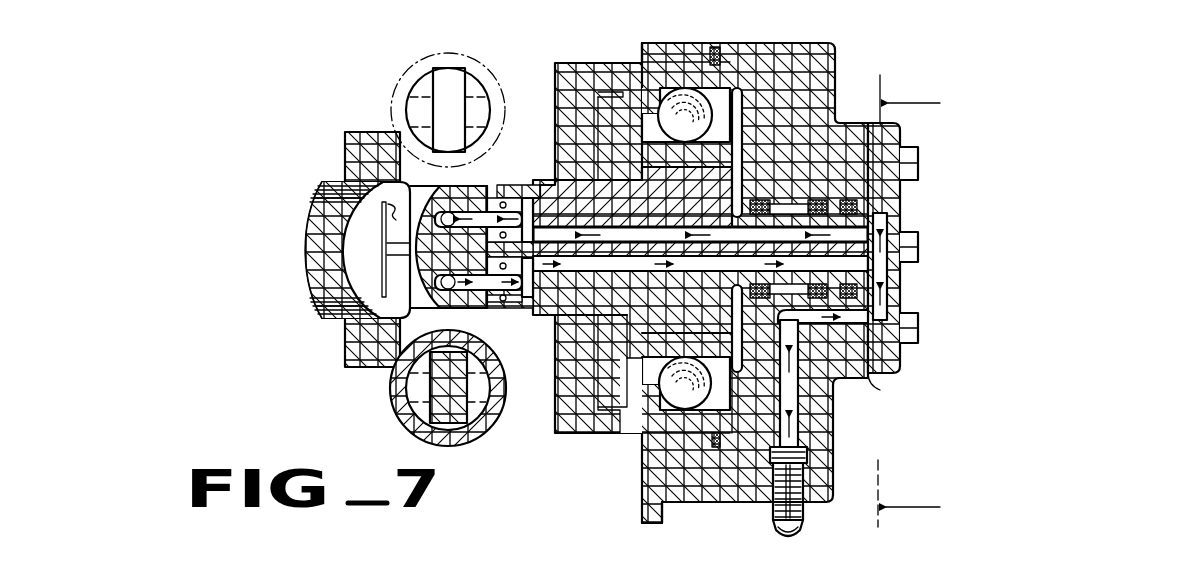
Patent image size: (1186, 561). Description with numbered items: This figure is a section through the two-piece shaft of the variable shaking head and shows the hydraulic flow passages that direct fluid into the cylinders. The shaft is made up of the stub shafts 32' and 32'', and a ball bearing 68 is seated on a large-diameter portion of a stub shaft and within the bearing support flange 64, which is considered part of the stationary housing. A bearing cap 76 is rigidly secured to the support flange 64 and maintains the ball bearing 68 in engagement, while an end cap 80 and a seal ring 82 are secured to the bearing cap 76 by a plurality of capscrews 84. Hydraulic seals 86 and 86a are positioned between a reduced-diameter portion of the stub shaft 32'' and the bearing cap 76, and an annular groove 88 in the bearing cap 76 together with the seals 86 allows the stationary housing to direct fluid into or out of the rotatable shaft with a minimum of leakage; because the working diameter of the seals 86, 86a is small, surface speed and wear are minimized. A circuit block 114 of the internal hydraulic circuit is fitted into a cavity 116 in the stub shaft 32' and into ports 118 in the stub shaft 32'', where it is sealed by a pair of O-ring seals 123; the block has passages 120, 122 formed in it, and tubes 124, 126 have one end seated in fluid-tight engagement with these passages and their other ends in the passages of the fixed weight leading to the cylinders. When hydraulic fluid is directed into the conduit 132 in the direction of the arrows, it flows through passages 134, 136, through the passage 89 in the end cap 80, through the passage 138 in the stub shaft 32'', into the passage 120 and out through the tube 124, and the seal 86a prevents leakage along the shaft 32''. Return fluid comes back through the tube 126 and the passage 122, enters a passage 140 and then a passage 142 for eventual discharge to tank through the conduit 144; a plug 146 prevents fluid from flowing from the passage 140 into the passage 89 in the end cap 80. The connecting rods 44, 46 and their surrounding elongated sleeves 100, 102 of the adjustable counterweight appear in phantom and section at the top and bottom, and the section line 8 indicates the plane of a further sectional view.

The elongated sleeve 102 is at (403, 76).
The connecting rod 46 is at (428, 88).
The passage 120 is at (463, 213).
The tube 126 is at (440, 190).
The cavity 116 is at (380, 204).
The circuit block 114 is at (487, 247).
The stub shaft 32' is at (269, 250).
The tube 124 is at (445, 316).
The connecting rod 44 is at (443, 389).
The elongated sleeve 100 is at (397, 413).
The ball bearing 68 is at (692, 88).
The bearing cap 76 is at (823, 62).
The section line 8 is at (909, 301).
The capscrews 84 is at (920, 152).
The passage 89 is at (880, 223).
The plug 146 is at (860, 268).
The passage 136 is at (860, 321).
The end cap 80 is at (893, 368).
The seal ring 82 is at (899, 394).
The hydraulic seals 86 is at (817, 200).
The annular groove 88 is at (788, 207).
The hydraulic seal 86a is at (850, 202).
The stub shaft 32'' is at (700, 211).
The passage 138 is at (664, 232).
The port 118 is at (528, 207).
The passage 122 is at (512, 284).
The O-ring seals 123 is at (583, 303).
The passage 140 is at (640, 267).
The passage 142 is at (737, 310).
The bearing support flange 64 is at (650, 482).
The conduit 144 is at (775, 536).
The passage 134 is at (793, 407).
The conduit 132 is at (805, 472).